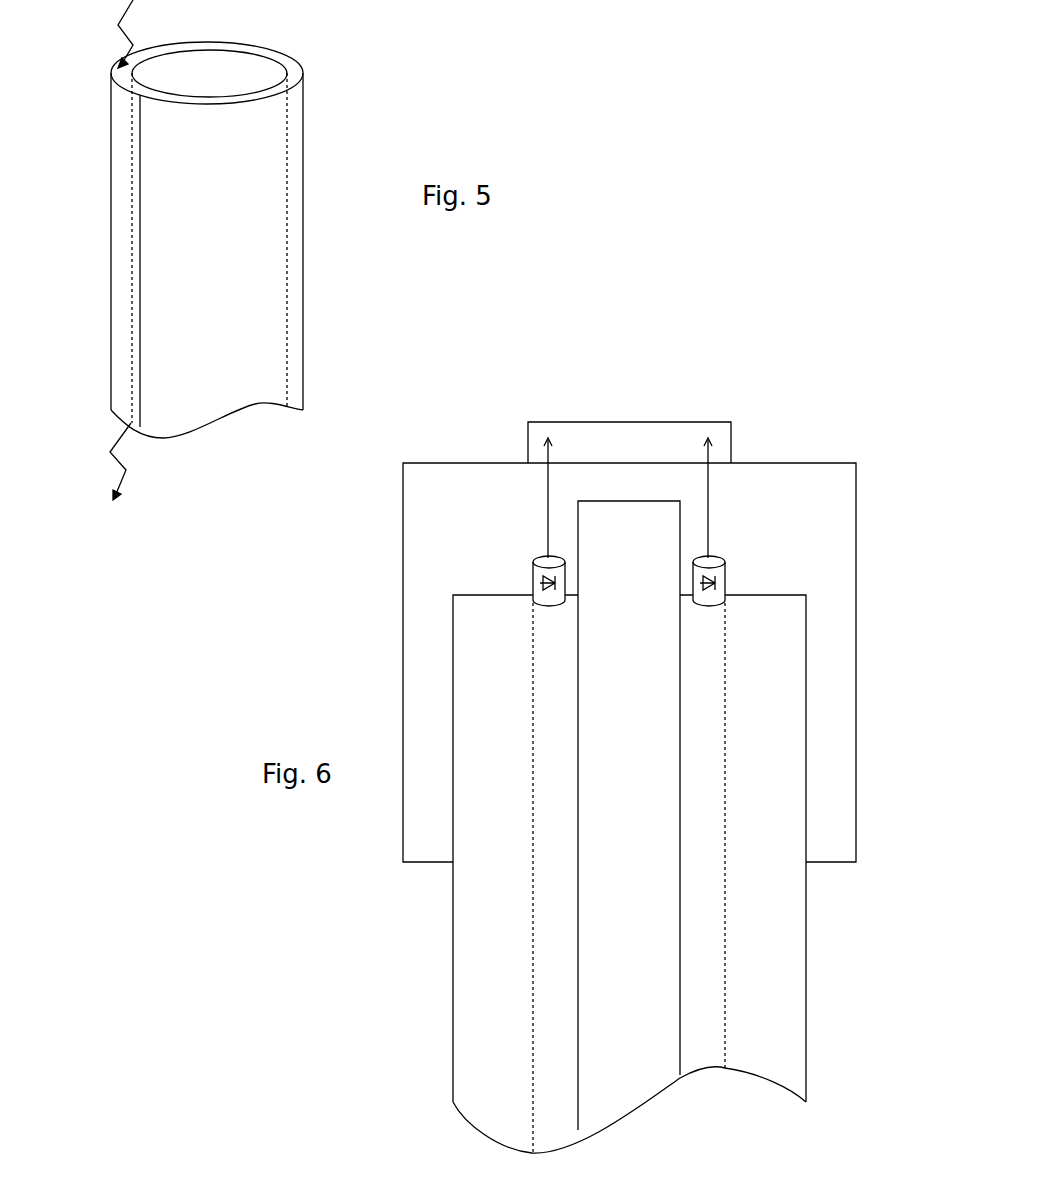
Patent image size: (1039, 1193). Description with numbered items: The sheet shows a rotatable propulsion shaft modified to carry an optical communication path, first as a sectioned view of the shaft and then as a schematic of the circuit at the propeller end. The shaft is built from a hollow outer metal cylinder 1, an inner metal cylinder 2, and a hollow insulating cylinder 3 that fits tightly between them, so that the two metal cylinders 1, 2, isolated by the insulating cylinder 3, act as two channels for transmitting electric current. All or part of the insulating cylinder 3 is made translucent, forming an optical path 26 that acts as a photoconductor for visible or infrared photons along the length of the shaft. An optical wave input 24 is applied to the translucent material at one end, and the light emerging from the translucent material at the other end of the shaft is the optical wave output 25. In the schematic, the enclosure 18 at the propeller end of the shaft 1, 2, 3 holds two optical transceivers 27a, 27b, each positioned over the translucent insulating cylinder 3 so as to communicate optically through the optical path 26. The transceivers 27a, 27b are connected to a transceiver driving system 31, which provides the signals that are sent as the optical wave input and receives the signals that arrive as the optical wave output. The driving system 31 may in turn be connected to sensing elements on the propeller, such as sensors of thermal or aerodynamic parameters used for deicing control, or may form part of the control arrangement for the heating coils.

In FIG. 6, the outer metal cylinder 1 is at (465, 995).
In FIG. 6, the inner metal cylinder 2 is at (641, 515).
In FIG. 5, the insulating cylinder 3 is at (262, 190).
In FIG. 6, the insulating cylinder 3 is at (705, 996).
In FIG. 6, the housing 18 is at (843, 476).
In FIG. 5, the optical wave input 24 is at (122, 12).
In FIG. 6, the optical wave input 24 is at (537, 605).
In FIG. 5, the lower edge 25 is at (110, 462).
In FIG. 5, the translucent insulating material 26 is at (132, 80).
In FIG. 6, the translucent insulating material 26 is at (707, 662).
In FIG. 6, the optical transceiver 27a is at (551, 565).
In FIG. 6, the optical transceiver 27b is at (726, 583).
In FIG. 6, the transceiver driving system 31 is at (718, 437).